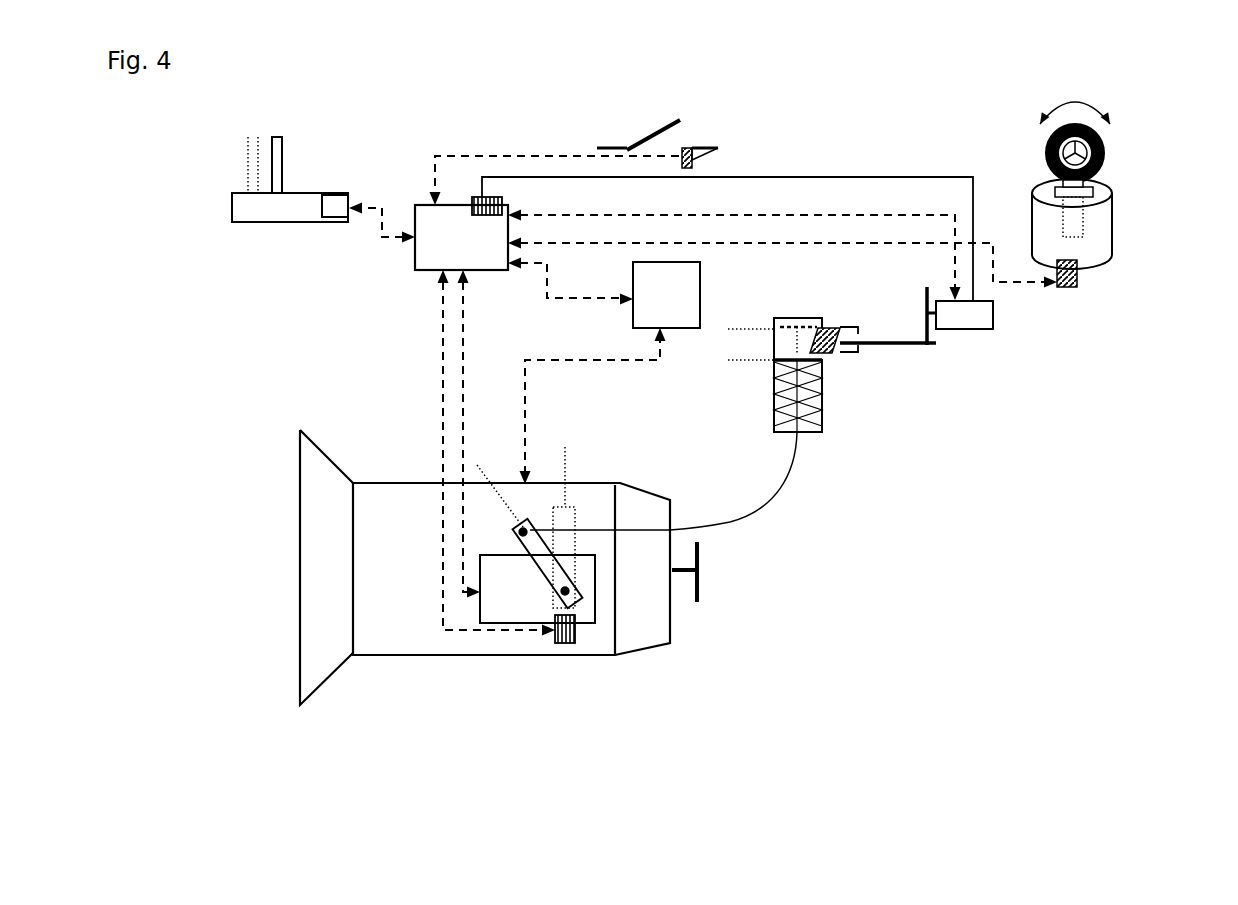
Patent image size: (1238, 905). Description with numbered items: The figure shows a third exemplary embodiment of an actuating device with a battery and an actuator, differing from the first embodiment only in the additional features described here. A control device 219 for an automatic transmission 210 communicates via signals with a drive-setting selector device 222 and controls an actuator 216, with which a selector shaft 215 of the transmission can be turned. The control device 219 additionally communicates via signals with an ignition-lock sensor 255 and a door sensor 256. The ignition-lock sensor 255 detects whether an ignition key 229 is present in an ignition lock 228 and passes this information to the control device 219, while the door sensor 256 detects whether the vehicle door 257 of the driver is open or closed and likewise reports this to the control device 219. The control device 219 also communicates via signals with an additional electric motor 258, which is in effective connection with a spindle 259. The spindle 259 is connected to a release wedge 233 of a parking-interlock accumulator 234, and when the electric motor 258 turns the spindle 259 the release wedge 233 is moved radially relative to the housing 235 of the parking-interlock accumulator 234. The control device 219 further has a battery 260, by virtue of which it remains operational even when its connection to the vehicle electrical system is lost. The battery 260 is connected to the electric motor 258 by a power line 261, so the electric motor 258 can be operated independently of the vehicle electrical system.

The automatic transmission 210 is at (242, 461).
The selector shaft 215 is at (553, 620).
The actuator 216 is at (478, 607).
The control device 219 is at (461, 237).
The drive-setting selector device 222 is at (212, 196).
The ignition lock 228 is at (1112, 222).
The ignition key 229 is at (1048, 142).
The release wedge 233 is at (857, 352).
The parking-interlock accumulator 234 is at (903, 437).
The housing 235 is at (805, 432).
The ignition-lock sensor 255 is at (1078, 280).
The door sensor 256 is at (715, 148).
The vehicle door 257 is at (640, 137).
The electric motor 258 is at (993, 323).
The spindle 259 is at (928, 346).
The battery 260 is at (488, 198).
The power line 261 is at (860, 177).